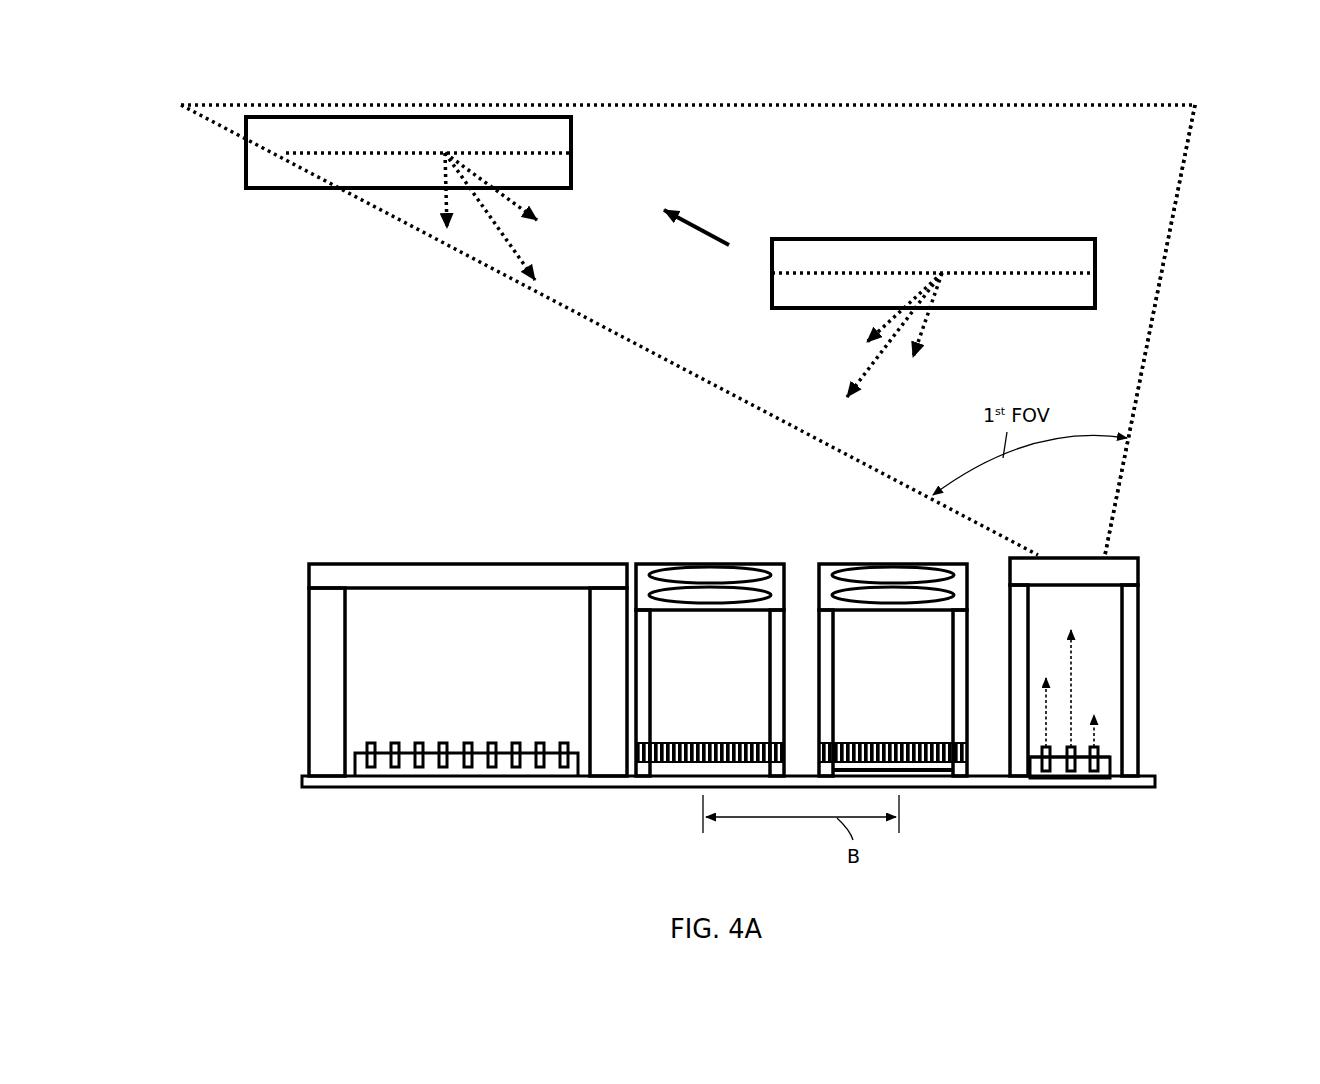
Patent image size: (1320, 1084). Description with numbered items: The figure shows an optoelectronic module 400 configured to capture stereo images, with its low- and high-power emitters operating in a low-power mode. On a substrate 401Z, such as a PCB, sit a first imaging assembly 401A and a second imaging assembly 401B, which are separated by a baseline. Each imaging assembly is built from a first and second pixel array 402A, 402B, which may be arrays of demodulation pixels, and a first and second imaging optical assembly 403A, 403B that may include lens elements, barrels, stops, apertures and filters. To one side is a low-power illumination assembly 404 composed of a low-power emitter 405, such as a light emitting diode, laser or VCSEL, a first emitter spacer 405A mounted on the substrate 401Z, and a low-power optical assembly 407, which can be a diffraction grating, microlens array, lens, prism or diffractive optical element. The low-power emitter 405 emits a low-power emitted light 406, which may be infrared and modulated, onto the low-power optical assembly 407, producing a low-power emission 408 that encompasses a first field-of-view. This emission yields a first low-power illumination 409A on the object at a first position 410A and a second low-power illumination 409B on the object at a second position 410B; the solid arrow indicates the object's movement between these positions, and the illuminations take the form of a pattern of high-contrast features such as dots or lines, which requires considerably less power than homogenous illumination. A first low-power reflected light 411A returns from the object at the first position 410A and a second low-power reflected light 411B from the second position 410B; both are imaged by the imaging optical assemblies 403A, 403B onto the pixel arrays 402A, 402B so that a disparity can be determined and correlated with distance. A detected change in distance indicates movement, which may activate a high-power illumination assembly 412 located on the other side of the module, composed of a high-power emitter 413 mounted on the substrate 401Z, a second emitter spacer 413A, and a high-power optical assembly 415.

The optoelectronic module 400 is at (160, 115).
The first imaging assembly 401A is at (700, 635).
The second imaging assembly 401B is at (890, 635).
The substrate 401Z is at (990, 780).
The first pixel array 402A is at (740, 743).
The second pixel array 402B is at (925, 753).
The first imaging optical assembly 403A is at (715, 567).
The second imaging optical assembly 403B is at (895, 563).
The low-power illumination assembly 404 is at (1148, 671).
The low-power emitter 405 is at (1103, 770).
The first emitter spacer 405A is at (1132, 630).
The low-power emitted light 406 is at (1071, 655).
The low-power optical assembly 407 is at (1112, 565).
The low-power emission 408 is at (1140, 375).
The first low-power illumination 409A is at (1000, 272).
The second low-power illumination 409B is at (353, 153).
The object at a first position 410A is at (925, 238).
The object at a second position 410B is at (573, 132).
The first low-power reflected light 411A is at (868, 372).
The second low-power reflected light 411B is at (518, 257).
The high-power illumination assembly 412 is at (400, 692).
The high-power emitter 413 is at (410, 770).
The second emitter spacer 413A is at (328, 680).
The high-power optical assembly 415 is at (309, 572).